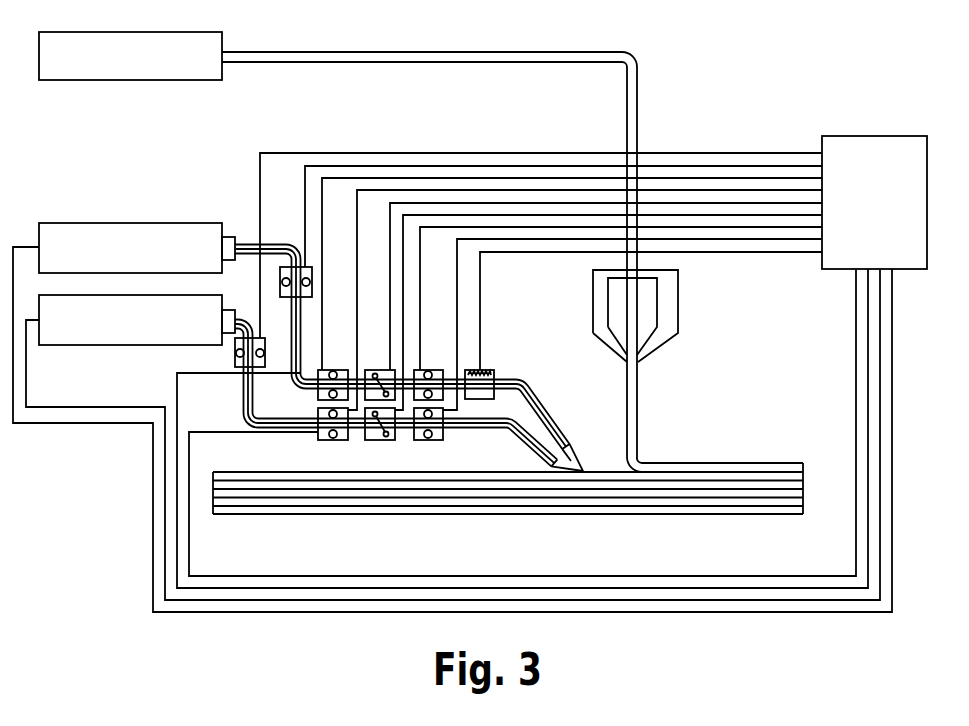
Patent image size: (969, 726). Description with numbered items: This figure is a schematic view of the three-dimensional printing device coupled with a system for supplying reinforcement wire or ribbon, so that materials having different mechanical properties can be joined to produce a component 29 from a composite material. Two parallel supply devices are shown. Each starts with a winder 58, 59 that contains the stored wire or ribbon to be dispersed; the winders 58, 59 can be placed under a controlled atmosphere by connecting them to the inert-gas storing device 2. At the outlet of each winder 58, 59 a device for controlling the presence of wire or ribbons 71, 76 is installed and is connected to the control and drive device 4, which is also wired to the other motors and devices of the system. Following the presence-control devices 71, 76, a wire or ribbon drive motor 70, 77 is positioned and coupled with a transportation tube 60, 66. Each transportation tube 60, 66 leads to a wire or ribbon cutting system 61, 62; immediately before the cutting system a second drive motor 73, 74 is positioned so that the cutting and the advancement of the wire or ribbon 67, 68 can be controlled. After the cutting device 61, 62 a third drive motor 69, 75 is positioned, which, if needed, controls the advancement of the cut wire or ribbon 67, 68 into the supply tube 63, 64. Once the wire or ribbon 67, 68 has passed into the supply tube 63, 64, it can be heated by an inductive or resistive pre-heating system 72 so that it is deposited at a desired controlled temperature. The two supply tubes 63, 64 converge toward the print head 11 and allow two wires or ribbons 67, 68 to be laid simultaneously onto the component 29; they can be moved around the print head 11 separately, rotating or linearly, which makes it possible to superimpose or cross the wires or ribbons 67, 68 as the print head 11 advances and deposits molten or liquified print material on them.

The inert-gas storing device 2 is at (421, 252).
The control and drive device 4 is at (470, 374).
The winder 58 is at (130, 248).
The winder 59 is at (130, 320).
The device for controlling the presence of wire or ribbons 71 is at (227, 237).
The device for controlling the presence of wire or ribbons 76 is at (227, 308).
The wire or ribbon drive motor 70 is at (283, 254).
The wire or ribbon drive motor 77 is at (265, 343).
The transportation tube 60 is at (318, 386).
The transportation tube 66 is at (245, 422).
The second drive motor 73 is at (342, 370).
The second drive motor 74 is at (343, 440).
The wire or ribbon cutting system 61 is at (373, 370).
The wire or ribbon cutting system 62 is at (368, 440).
The third drive motor 69 is at (433, 370).
The third drive motor 75 is at (418, 440).
The inductive or resistive pre-heating system 72 is at (481, 370).
The supply tube 63 is at (521, 379).
The wire or ribbon 68 is at (538, 455).
The supply tube 64 is at (540, 393).
The wire or ribbon 67 is at (563, 443).
The print head 11 is at (660, 337).
The component 29 is at (740, 508).